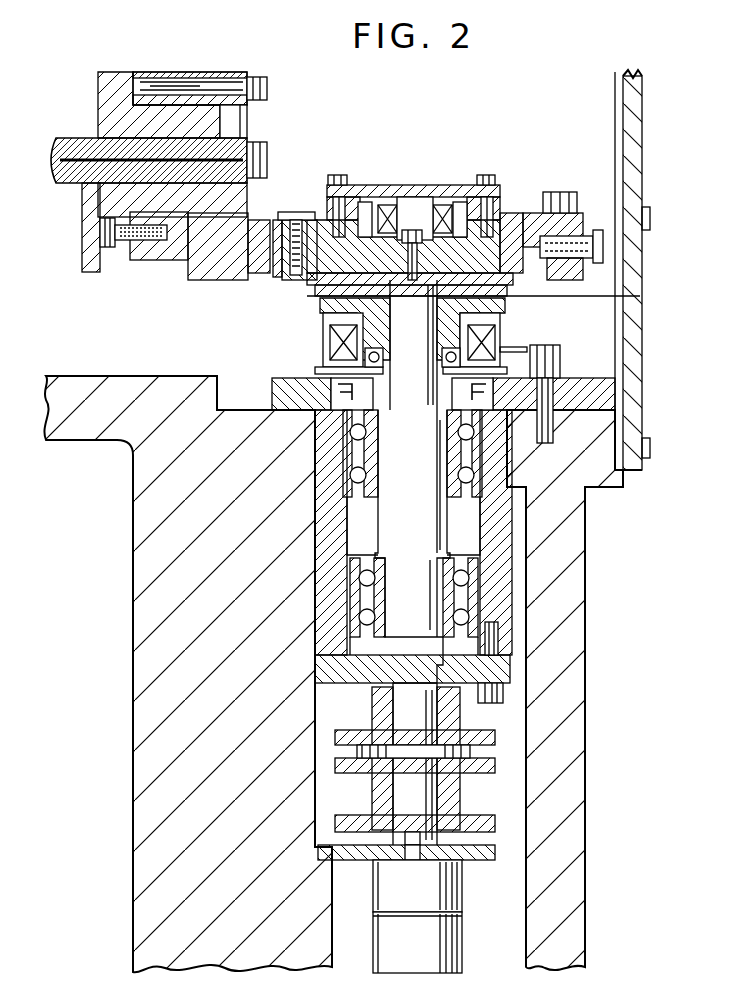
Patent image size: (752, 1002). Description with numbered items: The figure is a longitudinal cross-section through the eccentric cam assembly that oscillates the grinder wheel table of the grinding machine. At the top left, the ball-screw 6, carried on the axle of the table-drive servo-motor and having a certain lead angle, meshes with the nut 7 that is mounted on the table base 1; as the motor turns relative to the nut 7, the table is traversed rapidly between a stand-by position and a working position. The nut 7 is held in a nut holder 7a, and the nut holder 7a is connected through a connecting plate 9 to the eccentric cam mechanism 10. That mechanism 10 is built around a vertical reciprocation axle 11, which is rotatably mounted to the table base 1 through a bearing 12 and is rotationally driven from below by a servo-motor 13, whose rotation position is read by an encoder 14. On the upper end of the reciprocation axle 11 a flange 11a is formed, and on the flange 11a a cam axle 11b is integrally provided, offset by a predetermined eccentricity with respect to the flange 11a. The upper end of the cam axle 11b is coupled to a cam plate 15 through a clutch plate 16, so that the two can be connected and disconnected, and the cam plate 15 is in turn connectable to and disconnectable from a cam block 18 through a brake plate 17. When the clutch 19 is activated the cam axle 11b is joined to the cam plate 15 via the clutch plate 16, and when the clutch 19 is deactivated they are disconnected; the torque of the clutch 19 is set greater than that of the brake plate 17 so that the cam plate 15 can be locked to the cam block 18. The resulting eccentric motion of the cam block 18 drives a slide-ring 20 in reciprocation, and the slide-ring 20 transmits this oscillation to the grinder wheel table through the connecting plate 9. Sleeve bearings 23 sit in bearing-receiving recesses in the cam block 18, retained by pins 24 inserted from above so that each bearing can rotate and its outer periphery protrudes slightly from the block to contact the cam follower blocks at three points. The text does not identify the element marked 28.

The table base 1 is at (140, 607).
The ball-screw 6 is at (56, 184).
The nut 7 is at (100, 108).
The nut holder 7a is at (235, 124).
The connecting plate 9 is at (133, 260).
The eccentric cam mechanism 10 is at (413, 183).
The reciprocation axle 11 is at (425, 604).
The flange 11a is at (414, 393).
The cam axle 11b is at (423, 340).
The bearing 12 is at (477, 583).
The servo-motor 13 is at (428, 888).
The encoder 14 is at (433, 950).
The cam plate 15 is at (310, 290).
The clutch plate 16 is at (640, 297).
The brake plate 17 is at (443, 233).
The cam block 18 is at (502, 220).
The clutch 19 is at (330, 352).
The slide-ring 20 is at (583, 220).
The sleeve bearings 23 is at (283, 220).
The pins 24 is at (292, 213).
The pin 28 is at (428, 240).